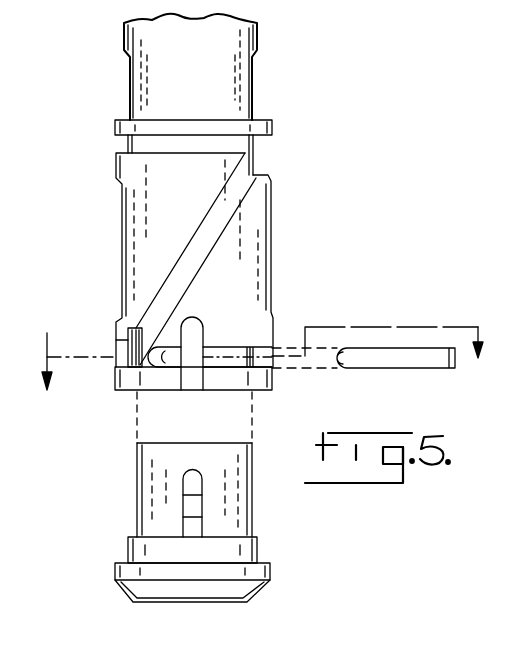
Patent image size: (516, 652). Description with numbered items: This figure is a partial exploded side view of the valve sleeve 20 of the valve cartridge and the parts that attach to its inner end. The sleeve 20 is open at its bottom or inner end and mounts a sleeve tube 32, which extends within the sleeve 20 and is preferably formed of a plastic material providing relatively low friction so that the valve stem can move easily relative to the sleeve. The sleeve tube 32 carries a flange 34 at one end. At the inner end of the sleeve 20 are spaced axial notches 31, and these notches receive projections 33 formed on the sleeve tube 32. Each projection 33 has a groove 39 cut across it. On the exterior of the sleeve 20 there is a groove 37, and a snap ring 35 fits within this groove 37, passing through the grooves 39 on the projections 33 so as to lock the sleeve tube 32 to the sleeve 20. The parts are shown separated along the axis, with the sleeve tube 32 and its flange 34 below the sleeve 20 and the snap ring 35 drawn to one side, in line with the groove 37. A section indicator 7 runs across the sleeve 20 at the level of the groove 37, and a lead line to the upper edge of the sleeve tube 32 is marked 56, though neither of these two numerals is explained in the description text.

The valve sleeve 20 is at (232, 85).
The axial notch 31 is at (192, 380).
The groove 37 is at (224, 352).
The snap ring 35 is at (401, 365).
The section line 7- 7 is at (267, 337).
The upper end face 56 is at (180, 440).
The sleeve tube 32 is at (147, 479).
The projection 33 is at (199, 483).
The groove 39 is at (198, 508).
The flange 34 is at (272, 569).